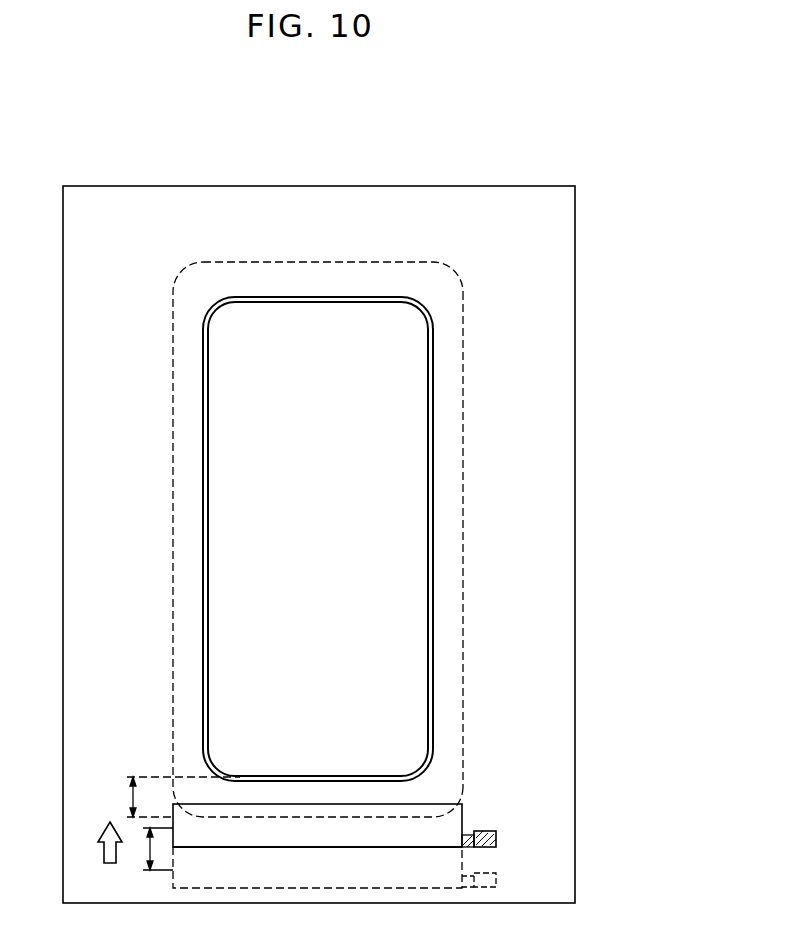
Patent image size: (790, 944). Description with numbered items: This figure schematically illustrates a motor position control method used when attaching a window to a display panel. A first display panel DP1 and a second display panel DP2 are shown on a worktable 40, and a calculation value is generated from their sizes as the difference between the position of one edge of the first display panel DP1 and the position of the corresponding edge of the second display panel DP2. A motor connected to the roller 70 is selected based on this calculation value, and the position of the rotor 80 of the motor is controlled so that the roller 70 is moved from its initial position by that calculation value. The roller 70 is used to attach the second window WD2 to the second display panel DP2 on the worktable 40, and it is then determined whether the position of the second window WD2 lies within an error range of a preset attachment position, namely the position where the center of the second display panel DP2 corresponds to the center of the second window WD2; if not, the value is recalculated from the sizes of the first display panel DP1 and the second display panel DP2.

The worktable 40 is at (238, 186).
The first display panel DP1 is at (340, 262).
The second display panel DP2 is at (383, 302).
The second window WD2 is at (435, 498).
The roller 70 is at (463, 810).
The rotor 80 is at (497, 840).